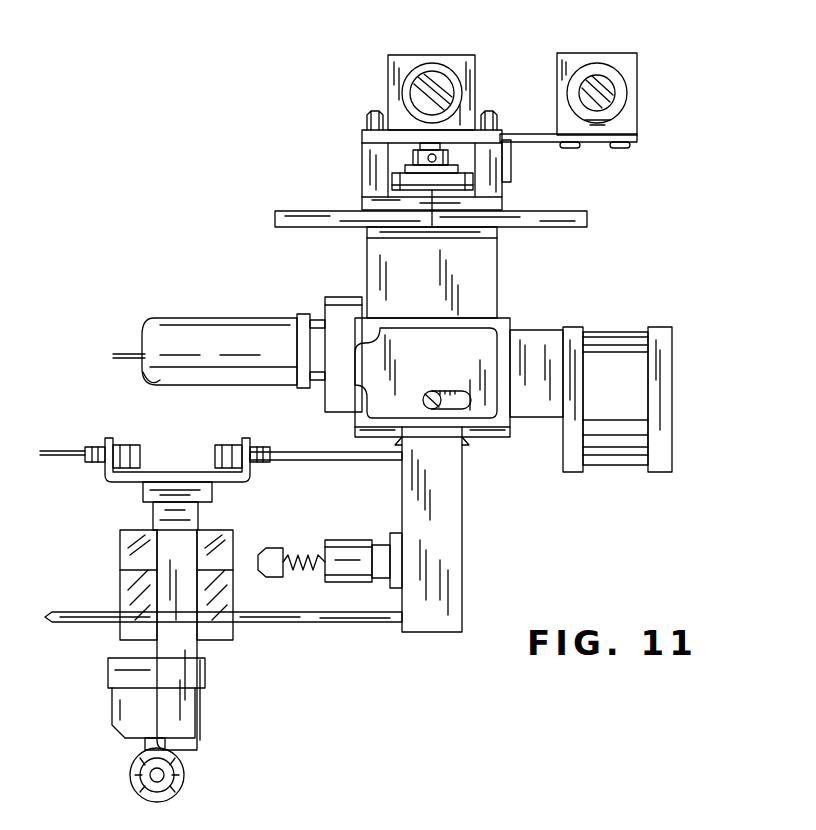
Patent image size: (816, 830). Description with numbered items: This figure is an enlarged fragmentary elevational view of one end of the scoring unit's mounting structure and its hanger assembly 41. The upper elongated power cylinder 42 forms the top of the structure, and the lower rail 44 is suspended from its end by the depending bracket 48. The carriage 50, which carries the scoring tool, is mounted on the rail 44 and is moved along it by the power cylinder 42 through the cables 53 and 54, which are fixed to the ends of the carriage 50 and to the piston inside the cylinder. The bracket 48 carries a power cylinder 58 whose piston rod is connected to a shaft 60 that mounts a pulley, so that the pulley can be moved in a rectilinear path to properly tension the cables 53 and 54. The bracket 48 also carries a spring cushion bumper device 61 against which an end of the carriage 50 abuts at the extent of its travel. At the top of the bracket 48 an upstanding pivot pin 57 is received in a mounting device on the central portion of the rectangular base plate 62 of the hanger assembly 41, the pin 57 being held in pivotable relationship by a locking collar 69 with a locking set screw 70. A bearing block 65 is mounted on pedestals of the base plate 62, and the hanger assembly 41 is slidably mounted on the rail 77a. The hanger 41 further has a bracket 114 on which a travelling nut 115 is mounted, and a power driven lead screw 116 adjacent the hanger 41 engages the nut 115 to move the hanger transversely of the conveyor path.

The hanger assembly 41 is at (482, 56).
The bearing block 65 is at (405, 65).
The rail 77a is at (422, 88).
The pivot pin 57 is at (433, 143).
The locking collar 69 is at (412, 153).
The locking set screw 70 is at (393, 177).
The base plate 62 is at (365, 203).
The travelling nut 115 is at (613, 77).
The lead screw 116 is at (613, 105).
The bracket 114 is at (550, 137).
The power cylinder 42 is at (208, 330).
The cable 53 is at (123, 350).
The shaft 60 is at (430, 400).
The power cylinder 58 is at (667, 368).
The bracket 48 is at (453, 577).
The cable 54 is at (297, 452).
The carriage 50 is at (120, 592).
The rail 44 is at (265, 618).
The spring cushion bumper device 61 is at (277, 547).